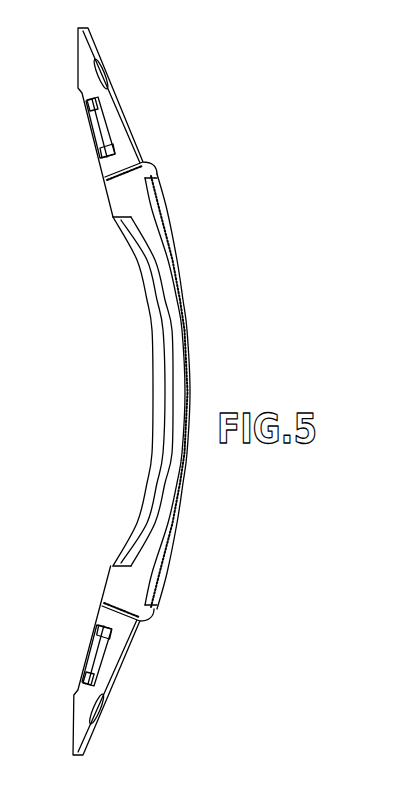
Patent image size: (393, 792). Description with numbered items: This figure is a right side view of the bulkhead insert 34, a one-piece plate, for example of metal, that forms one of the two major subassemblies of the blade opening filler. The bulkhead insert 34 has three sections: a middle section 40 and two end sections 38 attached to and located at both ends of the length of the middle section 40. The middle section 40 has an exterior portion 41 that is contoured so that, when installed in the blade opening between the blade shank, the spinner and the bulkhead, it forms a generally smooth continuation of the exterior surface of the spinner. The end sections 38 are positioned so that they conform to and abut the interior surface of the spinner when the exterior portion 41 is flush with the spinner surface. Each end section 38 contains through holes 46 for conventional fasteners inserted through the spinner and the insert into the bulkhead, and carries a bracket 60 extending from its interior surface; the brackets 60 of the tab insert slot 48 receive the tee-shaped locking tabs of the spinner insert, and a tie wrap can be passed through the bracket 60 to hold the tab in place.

The bulkhead insert 34 is at (212, 252).
The end section 38 is at (100, 45).
The middle section 40 is at (175, 278).
The exterior portion 41 is at (189, 414).
The through holes 46 is at (97, 75).
The tab insert slot 48 is at (101, 125).
The bracket 60 is at (89, 107).